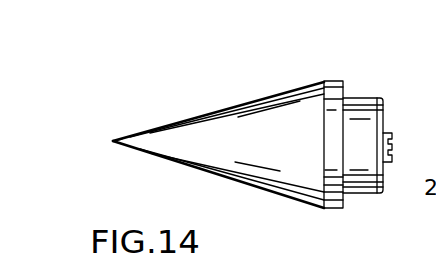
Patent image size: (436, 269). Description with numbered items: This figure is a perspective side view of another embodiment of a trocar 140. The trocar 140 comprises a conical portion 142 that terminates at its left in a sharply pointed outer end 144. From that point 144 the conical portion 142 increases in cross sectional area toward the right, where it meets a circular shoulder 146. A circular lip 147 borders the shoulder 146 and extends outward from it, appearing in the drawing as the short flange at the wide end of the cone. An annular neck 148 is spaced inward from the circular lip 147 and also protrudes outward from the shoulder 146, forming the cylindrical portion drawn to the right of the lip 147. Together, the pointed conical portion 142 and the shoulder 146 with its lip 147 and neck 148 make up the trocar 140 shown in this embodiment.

The trocar 140 is at (189, 118).
The conical portion 142 is at (263, 110).
The sharply pointed outer end 144 is at (112, 141).
The circular shoulder 146 is at (361, 112).
The circular lip 147 is at (333, 80).
The annular neck 148 is at (360, 98).